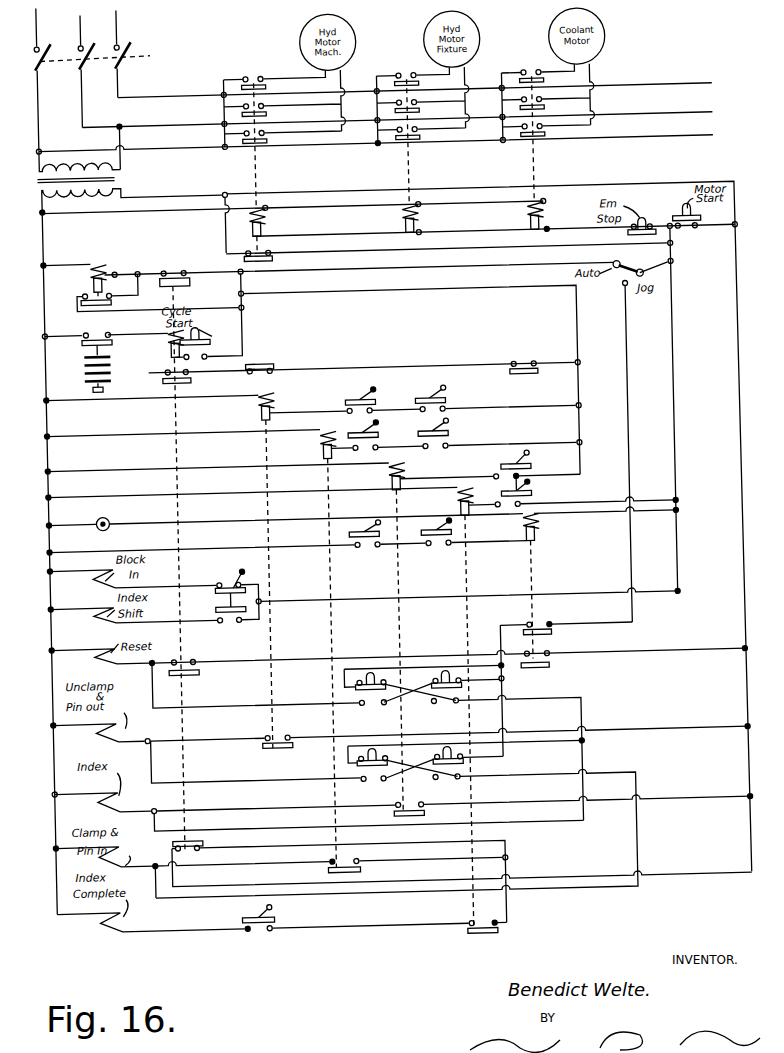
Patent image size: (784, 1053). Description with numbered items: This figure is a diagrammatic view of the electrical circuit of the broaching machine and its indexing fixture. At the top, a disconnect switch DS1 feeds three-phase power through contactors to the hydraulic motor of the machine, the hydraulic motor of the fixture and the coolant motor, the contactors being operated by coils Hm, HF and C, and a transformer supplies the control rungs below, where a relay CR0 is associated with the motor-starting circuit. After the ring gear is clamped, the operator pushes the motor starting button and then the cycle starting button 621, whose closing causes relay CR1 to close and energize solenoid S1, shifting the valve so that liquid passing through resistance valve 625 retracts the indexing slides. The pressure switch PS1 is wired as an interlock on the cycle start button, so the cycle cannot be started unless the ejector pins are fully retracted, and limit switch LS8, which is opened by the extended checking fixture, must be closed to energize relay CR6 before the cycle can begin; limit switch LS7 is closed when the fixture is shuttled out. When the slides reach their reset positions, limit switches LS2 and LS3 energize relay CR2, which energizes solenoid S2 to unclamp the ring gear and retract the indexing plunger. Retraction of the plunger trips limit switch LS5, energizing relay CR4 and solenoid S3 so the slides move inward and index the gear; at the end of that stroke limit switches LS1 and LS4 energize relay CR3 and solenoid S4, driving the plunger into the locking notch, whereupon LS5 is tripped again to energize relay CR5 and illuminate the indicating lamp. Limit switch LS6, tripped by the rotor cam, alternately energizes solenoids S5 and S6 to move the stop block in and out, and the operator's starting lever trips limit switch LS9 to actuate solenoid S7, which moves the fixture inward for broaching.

The main disconnect switch DS1 is at (146, 52).
The hydraulic motor (machine) contactor Hm is at (274, 219).
The hydraulic motor (fixture) contactor HF is at (430, 218).
The coolant motor contactor C is at (562, 222).
The control relay CR0 is at (100, 258).
The relay CR1 is at (190, 277).
The relay CR2 is at (270, 451).
The relay CR3 is at (335, 470).
The relay CR4 is at (397, 507).
The relay CR5 is at (470, 565).
The relay CR6 is at (545, 578).
The pressure switch PS1 is at (92, 333).
The cycle starting button 621 is at (238, 337).
The resistance valve 625 is at (104, 515).
The limit switch LS1 is at (350, 431).
The limit switch LS2 is at (370, 388).
The limit switch LS3 is at (443, 388).
The limit switch LS4 is at (432, 431).
The limit switch LS5 is at (506, 466).
The limit switch LS6 is at (240, 566).
The limit switch LS7 is at (349, 533).
The limit switch LS8 is at (452, 531).
The limit switch LS9 is at (246, 911).
The solenoid S1 is at (99, 656).
The solenoid S2 is at (98, 734).
The solenoid S3 is at (101, 804).
The solenoid S4 is at (103, 859).
The solenoid S5 is at (131, 578).
The solenoid S6 is at (132, 613).
The solenoid S7 is at (151, 925).